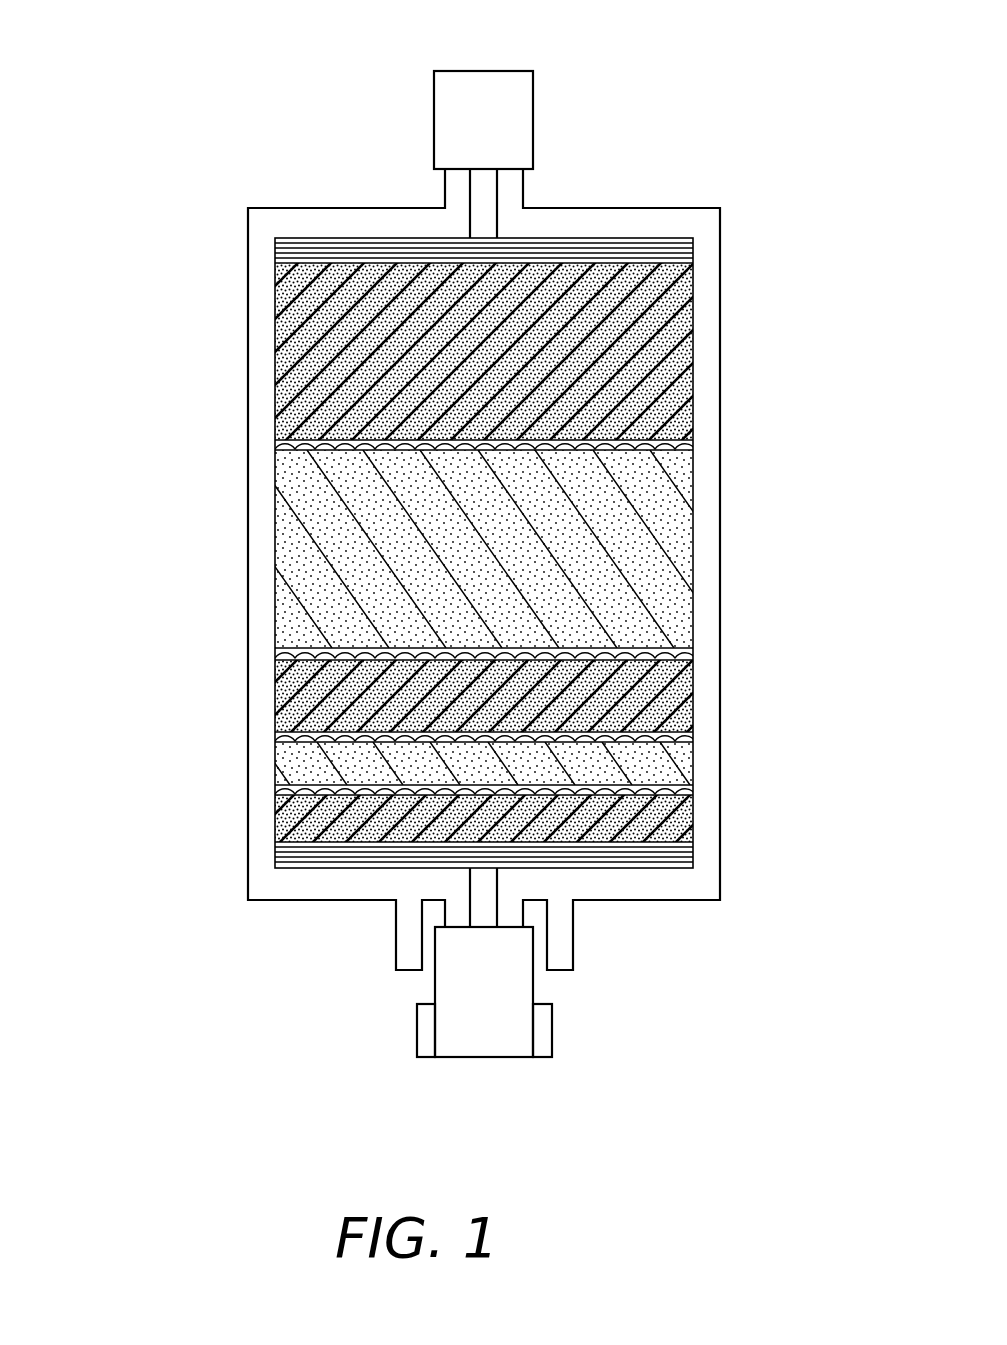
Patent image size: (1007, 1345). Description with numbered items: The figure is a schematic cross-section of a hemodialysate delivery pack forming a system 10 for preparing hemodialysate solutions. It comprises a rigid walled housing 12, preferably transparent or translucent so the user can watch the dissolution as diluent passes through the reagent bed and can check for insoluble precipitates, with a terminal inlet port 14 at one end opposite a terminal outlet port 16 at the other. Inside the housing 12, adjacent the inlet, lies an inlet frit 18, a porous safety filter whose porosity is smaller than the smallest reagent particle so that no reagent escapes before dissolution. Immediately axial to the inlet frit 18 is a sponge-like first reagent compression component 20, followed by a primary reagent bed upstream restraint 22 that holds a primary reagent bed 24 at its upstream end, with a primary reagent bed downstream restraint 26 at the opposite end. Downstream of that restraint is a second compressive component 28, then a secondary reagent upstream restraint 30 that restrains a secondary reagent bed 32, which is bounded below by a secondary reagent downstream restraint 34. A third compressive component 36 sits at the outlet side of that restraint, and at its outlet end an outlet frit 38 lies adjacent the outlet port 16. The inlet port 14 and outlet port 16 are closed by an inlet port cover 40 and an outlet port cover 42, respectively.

The system 10 is at (165, 62).
The housing 12 is at (708, 537).
The inlet port 14 is at (483, 208).
The outlet port 16 is at (483, 897).
The inlet frit 18 is at (585, 247).
The first reagent compression component 20 is at (690, 305).
The primary reagent bed upstream restraint 22 is at (692, 442).
The primary reagent bed 24 is at (617, 508).
The primary reagent bed downstream restraint 26 is at (690, 650).
The second compressive component 28 is at (287, 667).
The secondary reagent upstream restraint 30 is at (690, 733).
The secondary reagent bed 32 is at (297, 767).
The secondary reagent downstream restraint 34 is at (690, 785).
The third compressive component 36 is at (690, 817).
The outlet frit 38 is at (617, 862).
The inlet port cover 40 is at (490, 87).
The outlet port cover 42 is at (492, 992).